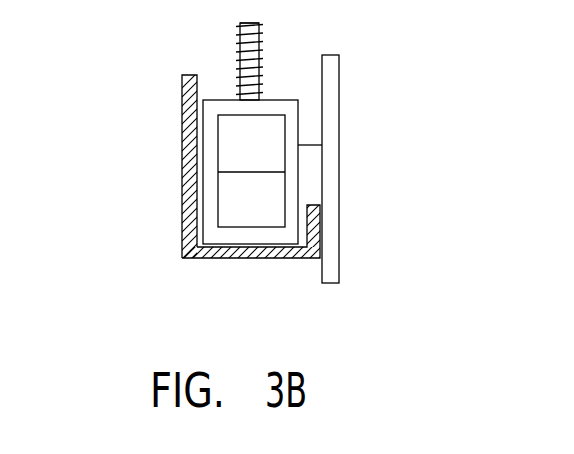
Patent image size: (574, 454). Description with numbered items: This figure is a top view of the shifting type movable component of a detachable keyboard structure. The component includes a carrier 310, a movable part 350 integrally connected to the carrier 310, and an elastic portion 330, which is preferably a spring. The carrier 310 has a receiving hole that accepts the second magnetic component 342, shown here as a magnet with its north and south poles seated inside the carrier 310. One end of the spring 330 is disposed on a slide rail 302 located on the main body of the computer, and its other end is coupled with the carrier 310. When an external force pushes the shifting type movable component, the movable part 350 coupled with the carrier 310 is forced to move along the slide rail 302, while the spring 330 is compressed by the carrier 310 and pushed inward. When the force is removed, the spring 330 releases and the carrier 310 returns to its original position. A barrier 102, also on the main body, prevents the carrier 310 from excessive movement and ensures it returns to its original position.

The barrier 102 is at (181, 86).
The slide rail 302 is at (262, 42).
The carrier 310 is at (222, 258).
The elastic portion 330 is at (240, 43).
The second magnetic component 342 is at (222, 228).
The movable part 350 is at (340, 88).